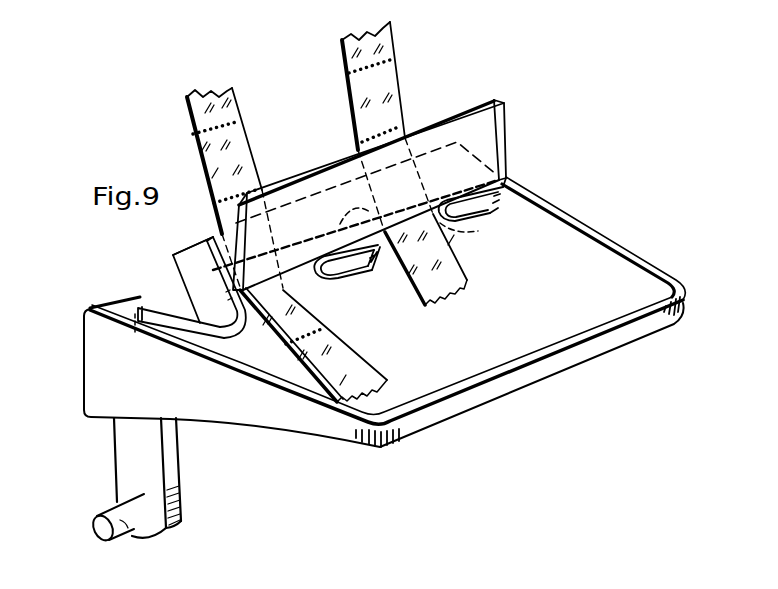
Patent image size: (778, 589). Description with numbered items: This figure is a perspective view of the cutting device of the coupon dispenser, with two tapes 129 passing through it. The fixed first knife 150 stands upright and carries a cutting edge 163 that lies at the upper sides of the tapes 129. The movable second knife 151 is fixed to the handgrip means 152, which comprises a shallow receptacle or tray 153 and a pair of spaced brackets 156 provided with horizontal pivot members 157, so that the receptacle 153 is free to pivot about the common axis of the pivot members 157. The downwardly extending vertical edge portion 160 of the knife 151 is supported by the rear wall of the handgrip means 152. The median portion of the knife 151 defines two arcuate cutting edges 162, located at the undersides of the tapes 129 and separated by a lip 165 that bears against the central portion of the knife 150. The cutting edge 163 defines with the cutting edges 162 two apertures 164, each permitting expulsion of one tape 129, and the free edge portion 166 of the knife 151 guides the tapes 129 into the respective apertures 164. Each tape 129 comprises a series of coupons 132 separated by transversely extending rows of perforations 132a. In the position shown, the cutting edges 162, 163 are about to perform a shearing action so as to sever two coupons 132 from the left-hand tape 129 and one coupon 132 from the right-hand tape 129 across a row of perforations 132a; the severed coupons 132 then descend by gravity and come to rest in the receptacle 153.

The tape 129 is at (192, 151).
The coupon 132 is at (460, 286).
The row of perforations 132a is at (391, 63).
The first knife 150 is at (483, 142).
The second knife 151 is at (206, 243).
The handgrip means 152 is at (594, 224).
The receptacle or tray 153 is at (445, 377).
The bracket 156 is at (175, 483).
The pivot member 157 is at (123, 520).
The vertical edge portion 160 is at (133, 327).
The arcuate cutting edge 162 is at (314, 217).
The cutting edge 163 is at (464, 229).
The aperture 164 is at (446, 222).
The lip 165 is at (377, 273).
The free edge portion 166 is at (190, 250).